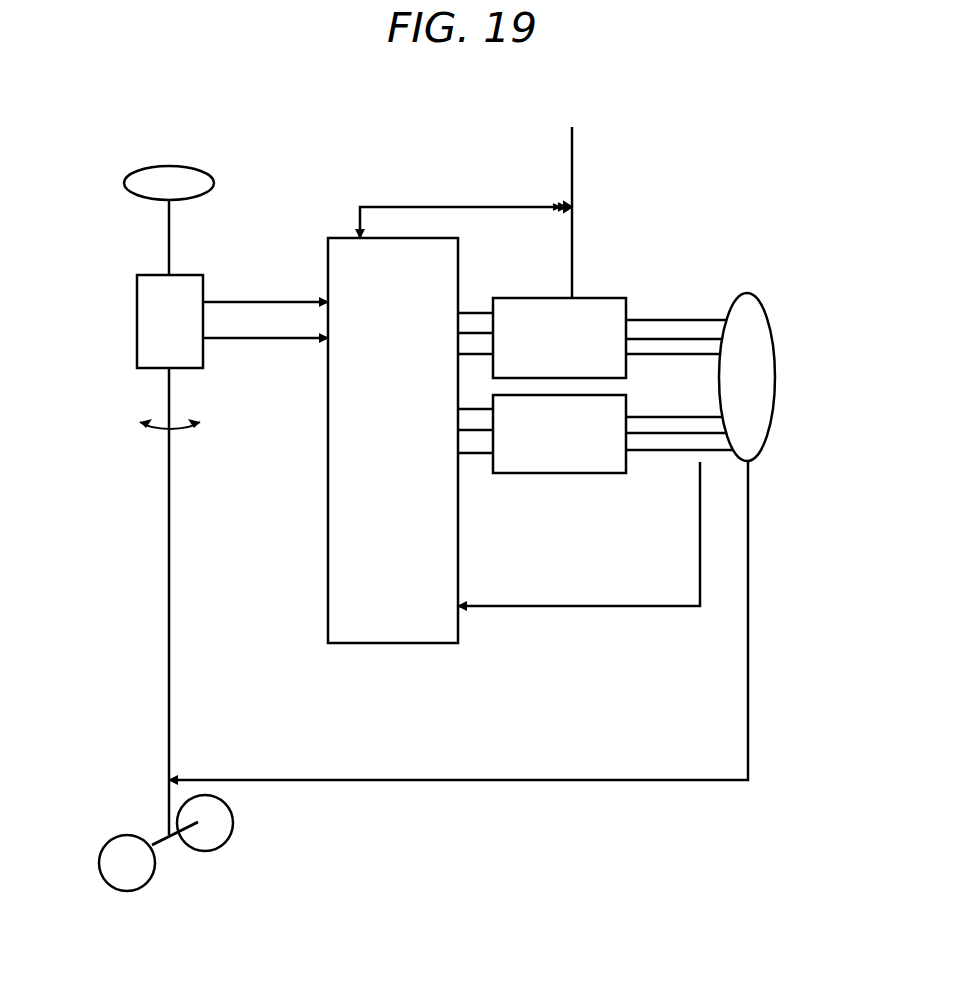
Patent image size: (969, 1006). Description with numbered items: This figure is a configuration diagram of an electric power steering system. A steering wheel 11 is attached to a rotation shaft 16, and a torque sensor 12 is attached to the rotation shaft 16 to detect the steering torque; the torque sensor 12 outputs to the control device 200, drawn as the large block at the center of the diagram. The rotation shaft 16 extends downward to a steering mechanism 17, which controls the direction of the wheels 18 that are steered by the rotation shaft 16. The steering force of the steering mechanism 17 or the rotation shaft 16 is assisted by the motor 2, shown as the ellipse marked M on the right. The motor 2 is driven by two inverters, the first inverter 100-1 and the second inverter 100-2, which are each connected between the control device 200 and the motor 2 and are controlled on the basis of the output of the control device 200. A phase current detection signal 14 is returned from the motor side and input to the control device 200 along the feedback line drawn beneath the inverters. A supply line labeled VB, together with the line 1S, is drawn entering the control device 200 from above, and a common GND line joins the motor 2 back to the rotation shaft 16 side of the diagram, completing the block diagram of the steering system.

The steering wheel 11 is at (213, 182).
The torque sensor 12 is at (196, 270).
The rotation shaft 16 is at (172, 550).
The control device 200 is at (328, 612).
The ignition switch signal line 1S is at (355, 222).
The first inverter 100-1 is at (600, 298).
The second inverter 100-2 is at (530, 473).
The motor 2 is at (770, 325).
The phase current detection signal 14 is at (615, 608).
The steering mechanism 17 is at (155, 845).
The wheels 18 is at (232, 833).